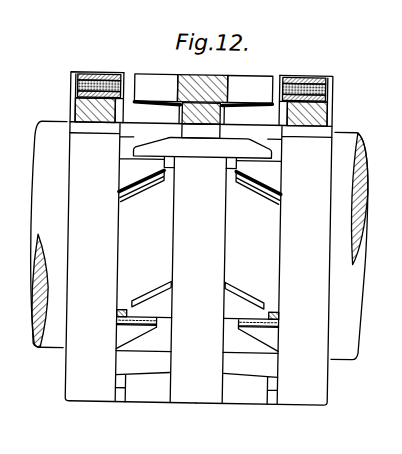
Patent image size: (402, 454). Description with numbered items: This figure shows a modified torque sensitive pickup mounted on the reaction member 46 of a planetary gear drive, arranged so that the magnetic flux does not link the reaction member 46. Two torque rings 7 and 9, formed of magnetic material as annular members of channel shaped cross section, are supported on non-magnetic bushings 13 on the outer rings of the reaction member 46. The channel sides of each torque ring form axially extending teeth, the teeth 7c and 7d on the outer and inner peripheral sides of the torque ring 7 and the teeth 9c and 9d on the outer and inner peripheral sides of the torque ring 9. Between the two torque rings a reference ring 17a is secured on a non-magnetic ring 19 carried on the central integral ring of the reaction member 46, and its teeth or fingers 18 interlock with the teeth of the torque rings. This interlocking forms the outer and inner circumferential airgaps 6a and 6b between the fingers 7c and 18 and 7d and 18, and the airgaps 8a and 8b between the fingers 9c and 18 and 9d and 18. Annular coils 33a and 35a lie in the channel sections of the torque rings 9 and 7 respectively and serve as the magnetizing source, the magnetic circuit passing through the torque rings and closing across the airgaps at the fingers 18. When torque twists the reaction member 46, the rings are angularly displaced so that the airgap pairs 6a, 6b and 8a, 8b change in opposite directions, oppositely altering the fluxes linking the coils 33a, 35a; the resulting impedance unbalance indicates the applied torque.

The torque ring 9 is at (69, 76).
The torque ring 7 is at (331, 83).
The annular coil 33a is at (75, 88).
The annular coil 35a is at (334, 91).
The non-magnetic bushing 13 is at (84, 108).
The reference ring 17a is at (200, 82).
The teeth or fingers 18 is at (155, 68).
The non-magnetic ring 19 is at (225, 113).
The reaction member 46 is at (365, 164).
The axially extending tooth 9c is at (147, 190).
The axially extending tooth 9d is at (158, 188).
The axially extending tooth 7c is at (247, 188).
The axially extending tooth 7d is at (260, 198).
The circumferential airgap 8b is at (121, 311).
The circumferential airgap 8a is at (133, 326).
The circumferential airgap 6b is at (276, 311).
The circumferential airgap 6a is at (260, 327).